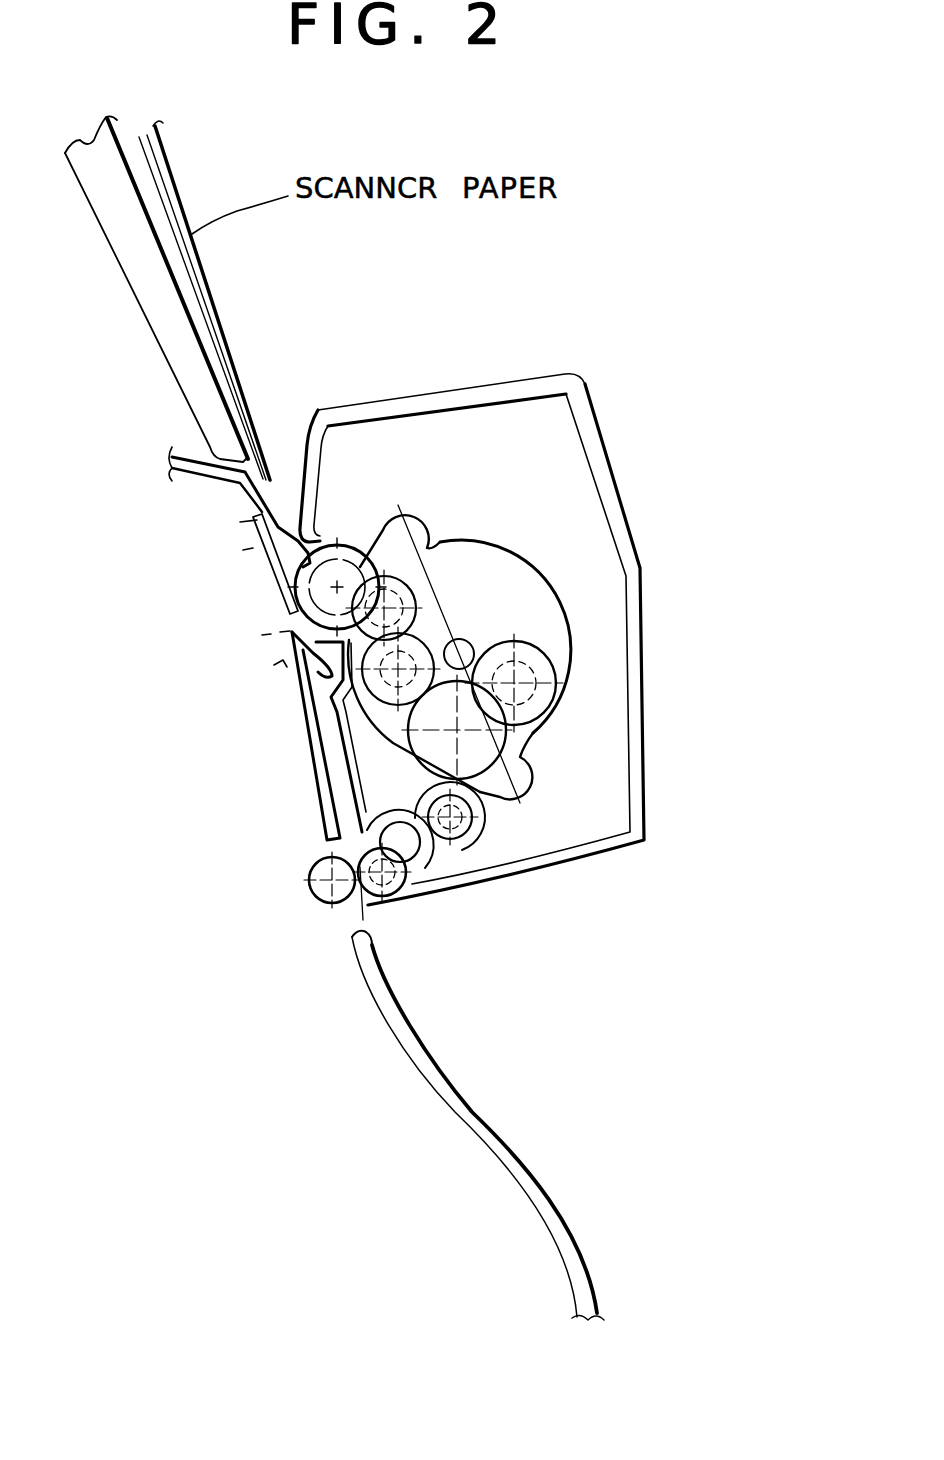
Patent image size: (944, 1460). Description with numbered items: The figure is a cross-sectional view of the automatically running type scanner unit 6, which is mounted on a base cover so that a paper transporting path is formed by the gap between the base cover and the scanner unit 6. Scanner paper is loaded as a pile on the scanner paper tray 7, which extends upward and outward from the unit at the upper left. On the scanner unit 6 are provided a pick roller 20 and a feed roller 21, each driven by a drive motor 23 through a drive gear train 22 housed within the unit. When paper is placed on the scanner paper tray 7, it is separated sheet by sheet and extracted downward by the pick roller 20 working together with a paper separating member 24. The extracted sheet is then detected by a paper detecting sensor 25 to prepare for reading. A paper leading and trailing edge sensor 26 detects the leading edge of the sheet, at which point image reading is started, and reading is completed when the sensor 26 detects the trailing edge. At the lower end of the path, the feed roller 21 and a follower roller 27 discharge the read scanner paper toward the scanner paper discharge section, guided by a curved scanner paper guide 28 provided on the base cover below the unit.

The scanner unit 6 is at (597, 408).
The scanner paper tray 7 is at (150, 316).
The pick roller 20 is at (350, 563).
The feed roller 21 is at (400, 906).
The drive gear train 22 is at (510, 724).
The drive motor 23 is at (500, 587).
The paper separating member 24 is at (295, 573).
The paper detecting sensor 25 is at (290, 545).
The paper leading and trailing edge sensor 26 is at (288, 652).
The follower roller 27 is at (329, 905).
The scanner paper guide 28 is at (517, 1152).